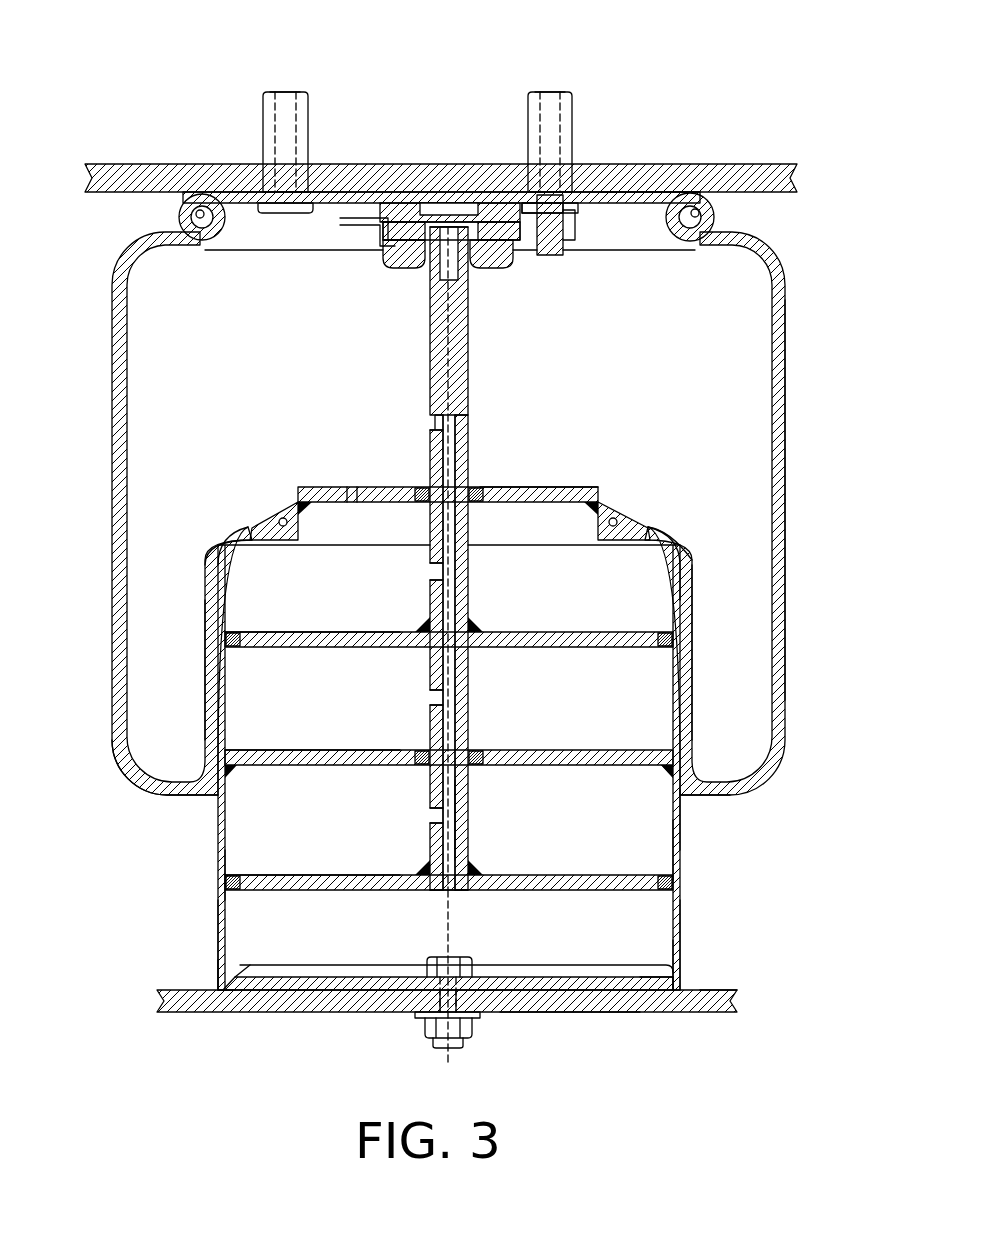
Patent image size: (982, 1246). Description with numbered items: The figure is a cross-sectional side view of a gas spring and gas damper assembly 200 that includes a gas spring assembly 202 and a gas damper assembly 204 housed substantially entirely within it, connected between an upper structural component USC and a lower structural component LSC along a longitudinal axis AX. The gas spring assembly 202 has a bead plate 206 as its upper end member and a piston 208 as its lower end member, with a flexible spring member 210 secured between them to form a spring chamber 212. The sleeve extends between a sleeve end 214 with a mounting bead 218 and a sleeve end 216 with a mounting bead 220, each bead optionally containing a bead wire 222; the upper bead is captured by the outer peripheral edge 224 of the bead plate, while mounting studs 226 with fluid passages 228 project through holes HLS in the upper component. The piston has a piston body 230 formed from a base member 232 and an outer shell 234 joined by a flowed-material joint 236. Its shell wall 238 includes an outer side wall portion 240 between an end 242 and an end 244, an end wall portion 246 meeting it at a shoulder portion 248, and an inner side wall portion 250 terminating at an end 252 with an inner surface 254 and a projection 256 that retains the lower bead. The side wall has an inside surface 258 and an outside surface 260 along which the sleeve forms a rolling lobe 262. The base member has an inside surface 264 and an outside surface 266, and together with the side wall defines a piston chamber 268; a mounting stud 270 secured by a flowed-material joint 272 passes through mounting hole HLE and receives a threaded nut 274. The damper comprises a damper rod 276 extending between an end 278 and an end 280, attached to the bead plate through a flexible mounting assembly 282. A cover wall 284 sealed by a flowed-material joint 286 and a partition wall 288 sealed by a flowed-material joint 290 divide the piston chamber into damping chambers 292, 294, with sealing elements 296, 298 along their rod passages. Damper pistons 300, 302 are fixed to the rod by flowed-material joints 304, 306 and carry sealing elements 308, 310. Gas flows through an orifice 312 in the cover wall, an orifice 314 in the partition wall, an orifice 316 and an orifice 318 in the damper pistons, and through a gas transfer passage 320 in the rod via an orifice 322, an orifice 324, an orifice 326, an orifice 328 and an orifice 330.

The gas spring and gas damper assembly 200 is at (777, 302).
The gas spring assembly 202 is at (105, 392).
The gas damper assembly 204 is at (232, 855).
The bead plate 206 is at (657, 186).
The piston 208 is at (690, 855).
The flexible spring member 210 is at (790, 512).
The spring chamber 212 is at (735, 340).
The sleeve end 214 is at (682, 258).
The sleeve end 216 is at (696, 522).
The mounting bead 218 is at (692, 198).
The mounting bead 220 is at (640, 522).
The bead wire 222 is at (712, 212).
The outer peripheral edge 224 is at (185, 208).
The mounting studs 226 is at (310, 122).
The fluid passage 228 is at (283, 92).
The piston body 230 is at (686, 945).
The base member 232 is at (562, 998).
The outer shell 234 is at (212, 820).
The flowed-material joint 236 is at (665, 1000).
The shell wall 238 is at (213, 690).
The outer side wall portion 240 is at (216, 925).
The end 242 is at (207, 562).
The end 244 is at (213, 972).
The end wall portion 246 is at (254, 528).
The shoulder portion 248 is at (212, 527).
The inner side wall portion 250 is at (300, 547).
The end 252 is at (300, 486).
The inner surface 254 is at (548, 547).
The projection 256 is at (296, 495).
The inside surface 258 is at (684, 812).
The outside surface 260 is at (684, 978).
The rolling lobe 262 is at (745, 780).
The inside surface 264 is at (283, 968).
The outside surface 266 is at (355, 985).
The piston chamber 268 is at (712, 1010).
The mounting stud 270 is at (472, 1028).
The flowed-material joint 272 is at (472, 965).
The threaded nut 274 is at (465, 1048).
The damper rod 276 is at (432, 355).
The end 278 is at (425, 316).
The end 280 is at (470, 812).
The flexible mounting assembly 282 is at (502, 284).
The cover wall 284 is at (522, 486).
The flowed-material joint 286 is at (577, 486).
The partition wall 288 is at (577, 749).
The flowed-material joint 290 is at (666, 770).
The damping chamber 292 is at (650, 582).
The damping chamber 294 is at (645, 856).
The sealing element 296 is at (477, 486).
The sealing element 298 is at (477, 749).
The damper piston 300 is at (572, 631).
The damper piston 302 is at (558, 892).
The flowed-material joint 304 is at (476, 631).
The flowed-material joint 306 is at (474, 872).
The sealing element 308 is at (245, 648).
The sealing element 310 is at (240, 892).
The orifice 312 is at (350, 486).
The orifice 314 is at (355, 631).
The orifice 316 is at (350, 749).
The orifice 318 is at (355, 874).
The gas transfer passage 320 is at (460, 530).
The orifice 322 is at (432, 422).
The orifice 324 is at (437, 572).
The orifice 326 is at (437, 698).
The orifice 328 is at (437, 818).
The orifice 330 is at (442, 893).
The upper structural component USC is at (150, 165).
The lower structural component LSC is at (210, 1004).
The holes HLS is at (312, 172).
The mounting hole HLE is at (432, 1000).
The longitudinal axis AX is at (445, 1078).